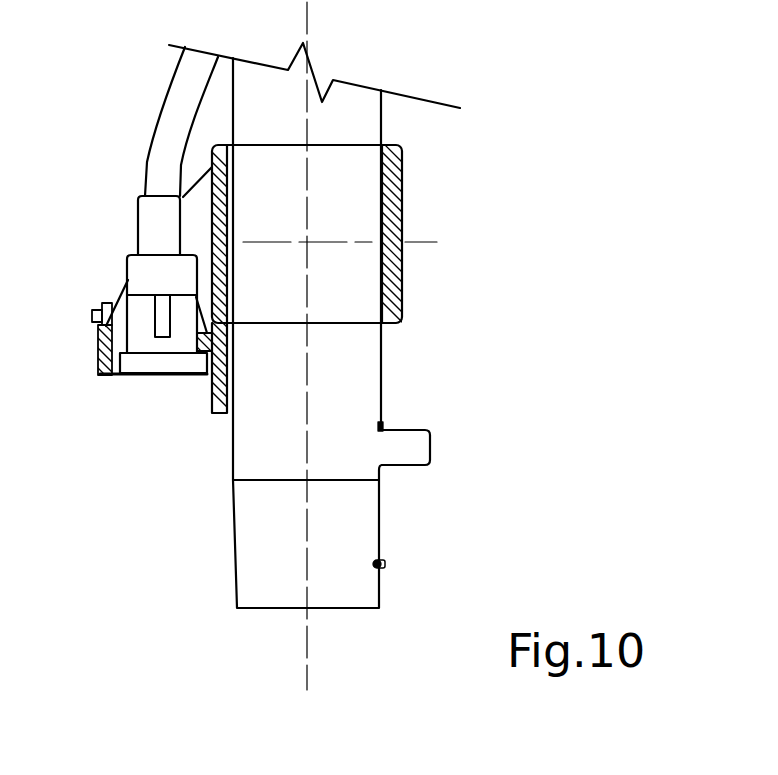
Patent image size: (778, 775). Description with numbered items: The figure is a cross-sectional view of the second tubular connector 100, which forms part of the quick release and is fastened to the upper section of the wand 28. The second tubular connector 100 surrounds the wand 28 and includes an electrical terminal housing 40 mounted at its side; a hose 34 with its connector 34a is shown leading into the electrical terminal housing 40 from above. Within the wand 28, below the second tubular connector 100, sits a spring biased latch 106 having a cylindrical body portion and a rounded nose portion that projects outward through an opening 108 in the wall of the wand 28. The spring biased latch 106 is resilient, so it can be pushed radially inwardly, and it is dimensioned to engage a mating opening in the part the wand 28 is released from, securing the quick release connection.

The wand 28 is at (365, 107).
The hose 34 is at (167, 150).
The hose connector 34a is at (157, 273).
The electrical terminal housing 40 is at (120, 303).
The second tubular connector 100 is at (390, 207).
The spring biased latch 106 is at (412, 447).
The opening 108 is at (382, 425).